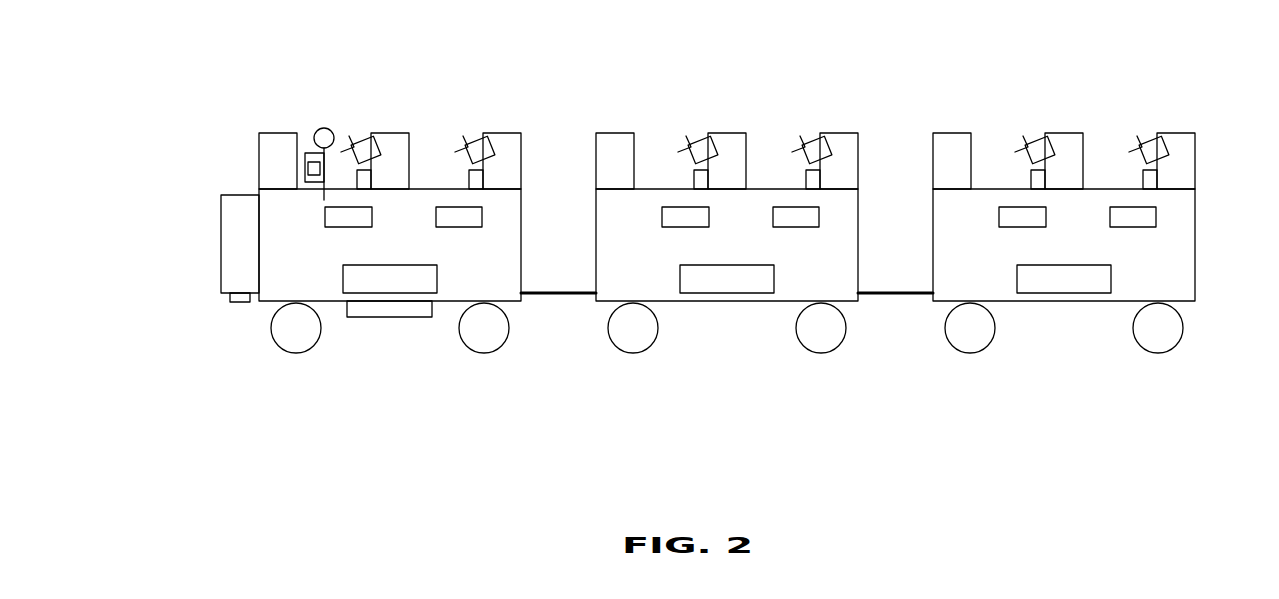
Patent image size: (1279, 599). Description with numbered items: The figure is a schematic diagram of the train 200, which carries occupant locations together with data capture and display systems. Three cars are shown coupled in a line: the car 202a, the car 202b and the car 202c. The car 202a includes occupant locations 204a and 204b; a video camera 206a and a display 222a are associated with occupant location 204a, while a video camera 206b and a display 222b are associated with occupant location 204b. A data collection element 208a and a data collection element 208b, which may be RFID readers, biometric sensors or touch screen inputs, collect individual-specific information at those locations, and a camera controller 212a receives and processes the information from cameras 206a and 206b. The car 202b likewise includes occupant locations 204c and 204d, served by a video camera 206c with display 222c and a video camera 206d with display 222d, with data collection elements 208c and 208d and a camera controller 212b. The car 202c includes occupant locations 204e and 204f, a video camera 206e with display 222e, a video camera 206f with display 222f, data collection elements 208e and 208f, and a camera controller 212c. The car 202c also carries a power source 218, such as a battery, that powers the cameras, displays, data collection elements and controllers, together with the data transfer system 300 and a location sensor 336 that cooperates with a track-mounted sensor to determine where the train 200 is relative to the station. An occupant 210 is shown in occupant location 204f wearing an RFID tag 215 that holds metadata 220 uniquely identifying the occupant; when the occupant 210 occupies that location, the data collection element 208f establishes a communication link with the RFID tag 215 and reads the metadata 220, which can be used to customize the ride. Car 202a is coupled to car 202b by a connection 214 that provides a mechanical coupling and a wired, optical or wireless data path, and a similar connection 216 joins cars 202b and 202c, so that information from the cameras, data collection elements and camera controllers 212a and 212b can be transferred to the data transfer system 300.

The train 200 is at (152, 51).
The car 202a is at (993, 295).
The car 202b is at (657, 295).
The car 202c is at (333, 295).
The occupant location 204a is at (1114, 125).
The occupant location 204b is at (992, 127).
The occupant location 204c is at (766, 128).
The occupant location 204d is at (642, 122).
The occupant location 204e is at (440, 130).
The occupant location 204f is at (320, 91).
The video camera 206a is at (1141, 147).
The video camera 206b is at (1028, 147).
The video camera 206c is at (805, 147).
The video camera 206d is at (690, 147).
The video camera 206e is at (468, 147).
The video camera 206f is at (353, 146).
The data collection element 208a is at (1126, 228).
The data collection element 208b is at (1006, 228).
The data collection element 208c is at (785, 228).
The data collection element 208d is at (668, 228).
The data collection element 208e is at (442, 228).
The data collection element 208f is at (347, 228).
The occupant 210 is at (316, 131).
The camera controller 212a is at (1038, 288).
The camera controller 212b is at (701, 288).
The camera controller 212c is at (364, 288).
The connection 214 is at (892, 295).
The RFID tag 215 is at (311, 183).
The connection 216 is at (557, 295).
The power source 218 is at (363, 318).
The metadata 220 is at (305, 168).
The display 222a is at (1158, 178).
The display 222b is at (1030, 180).
The display 222c is at (821, 178).
The display 222d is at (692, 178).
The display 222e is at (483, 178).
The display 222f is at (372, 178).
The data transfer system 300 is at (220, 230).
The location sensor 336 is at (228, 303).